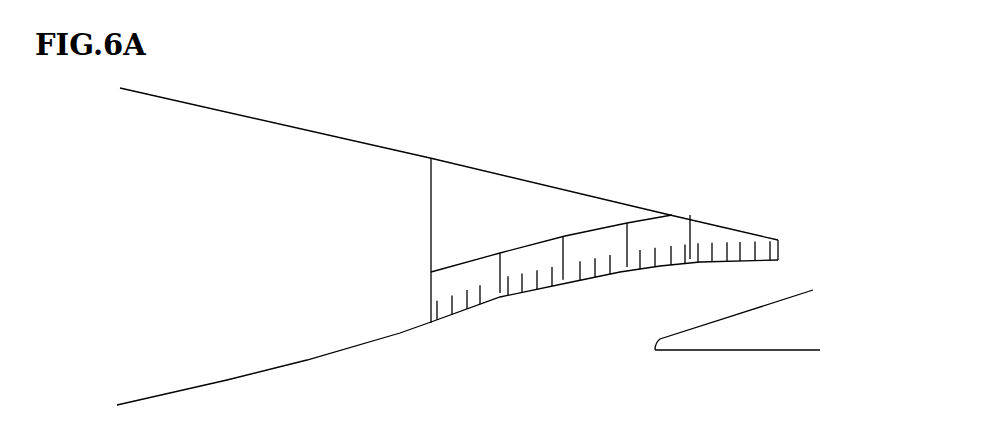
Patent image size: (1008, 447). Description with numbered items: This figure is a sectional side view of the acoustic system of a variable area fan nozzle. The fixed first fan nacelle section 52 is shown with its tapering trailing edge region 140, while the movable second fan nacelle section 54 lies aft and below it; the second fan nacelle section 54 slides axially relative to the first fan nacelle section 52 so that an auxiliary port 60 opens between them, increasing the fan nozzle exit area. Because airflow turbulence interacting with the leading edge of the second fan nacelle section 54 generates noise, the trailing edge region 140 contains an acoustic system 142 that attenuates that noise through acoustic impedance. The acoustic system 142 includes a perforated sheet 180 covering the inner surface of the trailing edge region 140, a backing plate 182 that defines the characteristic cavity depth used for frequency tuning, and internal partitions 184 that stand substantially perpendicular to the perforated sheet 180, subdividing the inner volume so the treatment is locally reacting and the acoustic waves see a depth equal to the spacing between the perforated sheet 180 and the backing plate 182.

The first fan nacelle section 52 is at (350, 113).
The second fan nacelle section 54 is at (768, 368).
The auxiliary port 60 is at (782, 280).
The trailing edge region 140 is at (500, 162).
The acoustic system 142 is at (551, 162).
The perforated sheet 180 is at (597, 279).
The backing plate 182 is at (460, 266).
The internal partitions 184 is at (506, 272).